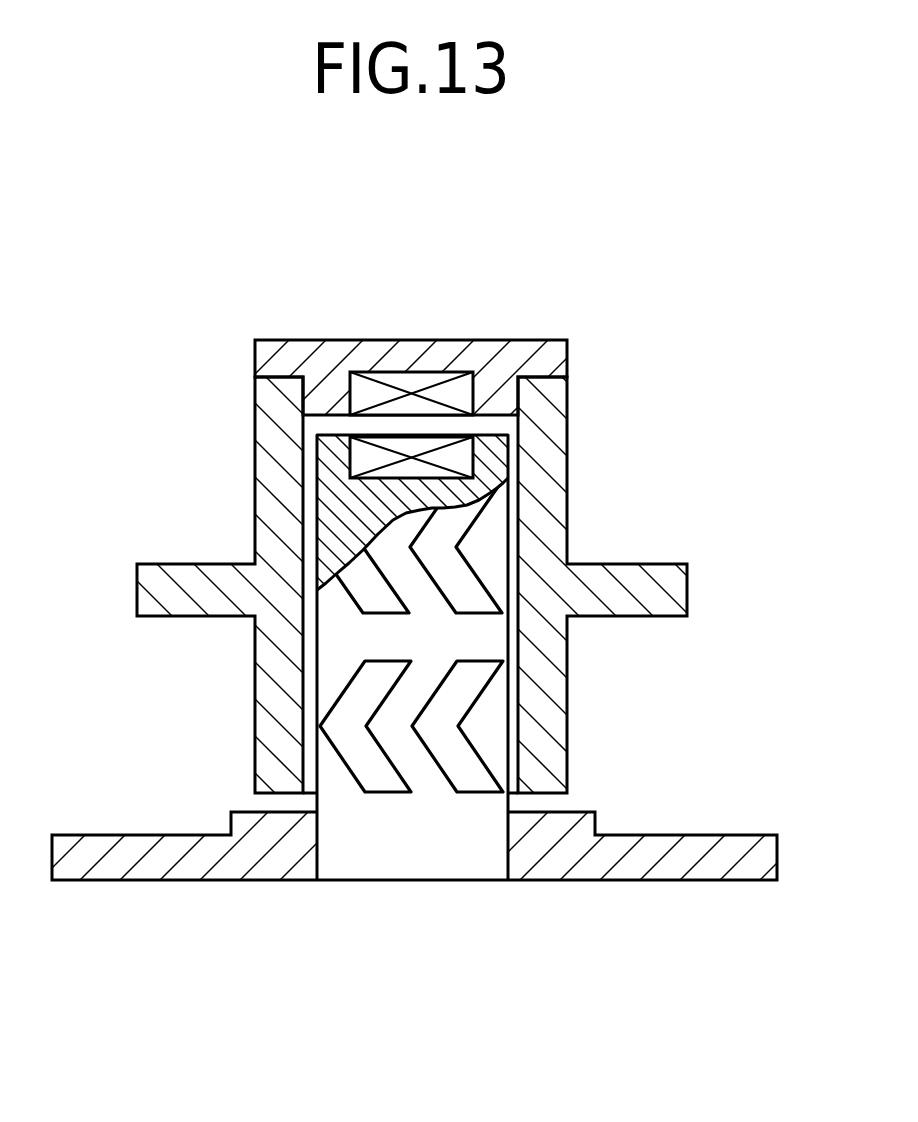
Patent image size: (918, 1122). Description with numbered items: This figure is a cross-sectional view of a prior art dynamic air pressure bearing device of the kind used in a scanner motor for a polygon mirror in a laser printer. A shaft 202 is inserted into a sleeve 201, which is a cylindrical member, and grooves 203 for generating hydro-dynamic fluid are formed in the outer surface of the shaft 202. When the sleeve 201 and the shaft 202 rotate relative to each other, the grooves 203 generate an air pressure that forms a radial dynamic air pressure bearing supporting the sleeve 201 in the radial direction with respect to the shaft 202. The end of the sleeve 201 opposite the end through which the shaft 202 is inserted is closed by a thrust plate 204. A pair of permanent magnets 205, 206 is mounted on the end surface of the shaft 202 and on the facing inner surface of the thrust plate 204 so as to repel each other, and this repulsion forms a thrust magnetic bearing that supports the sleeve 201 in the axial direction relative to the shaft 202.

The sleeve 201 is at (552, 517).
The shaft 202 is at (410, 860).
The grooves for generating hydro-dynamic fluid 203 is at (480, 598).
The thrust plate 204 is at (540, 348).
The permanent magnet 205 is at (463, 455).
The permanent magnet 206 is at (417, 380).